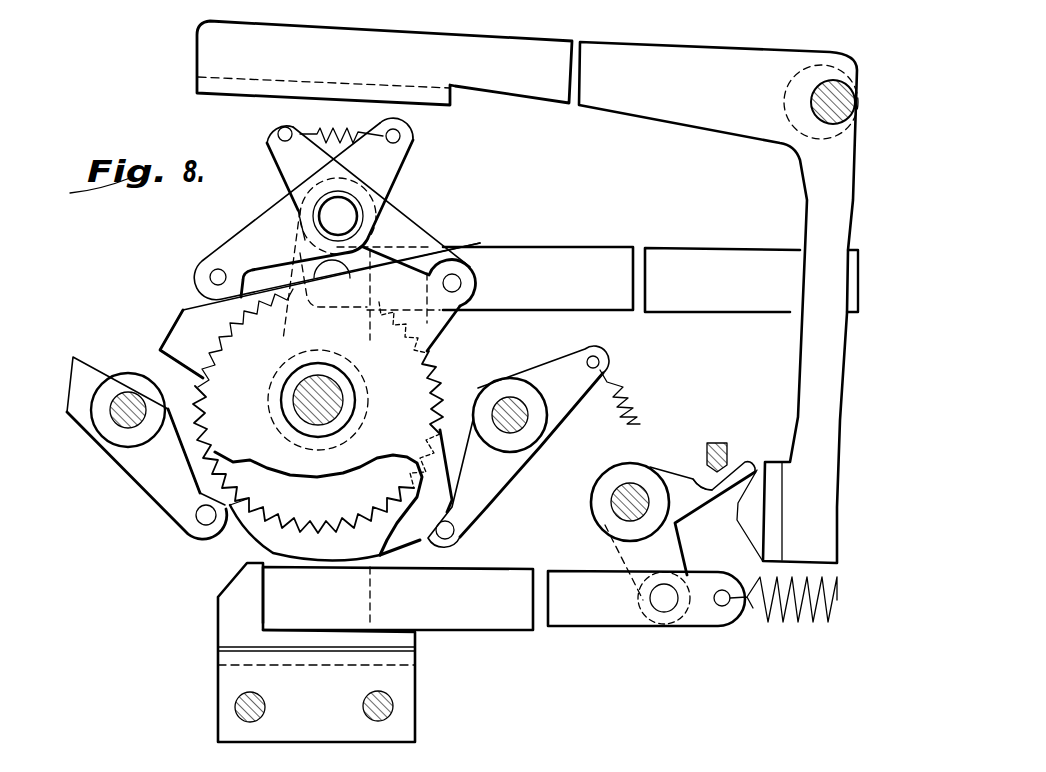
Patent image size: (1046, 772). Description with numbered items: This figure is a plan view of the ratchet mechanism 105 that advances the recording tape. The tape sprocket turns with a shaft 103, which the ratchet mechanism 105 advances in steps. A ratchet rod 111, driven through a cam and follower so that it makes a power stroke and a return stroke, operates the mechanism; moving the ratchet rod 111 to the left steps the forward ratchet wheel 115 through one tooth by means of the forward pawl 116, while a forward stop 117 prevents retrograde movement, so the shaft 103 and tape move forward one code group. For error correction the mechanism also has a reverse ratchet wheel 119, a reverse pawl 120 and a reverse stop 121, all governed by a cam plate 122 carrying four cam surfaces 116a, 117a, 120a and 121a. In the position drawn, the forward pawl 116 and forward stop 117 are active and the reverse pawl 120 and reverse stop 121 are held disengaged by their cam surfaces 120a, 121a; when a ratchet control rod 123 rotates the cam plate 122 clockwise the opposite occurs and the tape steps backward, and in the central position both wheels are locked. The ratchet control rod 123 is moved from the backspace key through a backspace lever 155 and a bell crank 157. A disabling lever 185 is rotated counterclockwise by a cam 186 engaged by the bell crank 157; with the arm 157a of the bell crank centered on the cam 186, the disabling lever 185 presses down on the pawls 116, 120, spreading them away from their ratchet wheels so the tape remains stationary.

The shaft 103 is at (307, 402).
The ratchet mechanism 105 is at (163, 290).
The ratchet rod 111 is at (582, 258).
The forward ratchet wheel 115 is at (378, 456).
The forward pawl 116 is at (260, 232).
The cam surface 116a is at (176, 333).
The forward stop 117 is at (162, 498).
The cam surface 117a is at (242, 550).
The reverse ratchet wheel 119 is at (453, 497).
The reverse pawl 120 is at (407, 227).
The cam surface 120a is at (437, 257).
The reverse stop 121 is at (500, 477).
The cam surface 121a is at (460, 555).
The cam plate 122 is at (407, 373).
The ratchet control rod 123 is at (490, 622).
The backspace lever 155 is at (753, 413).
The bell crank 157 is at (617, 532).
The arm 157a is at (697, 480).
The disabling lever 185 is at (710, 127).
The cam 186 is at (755, 527).